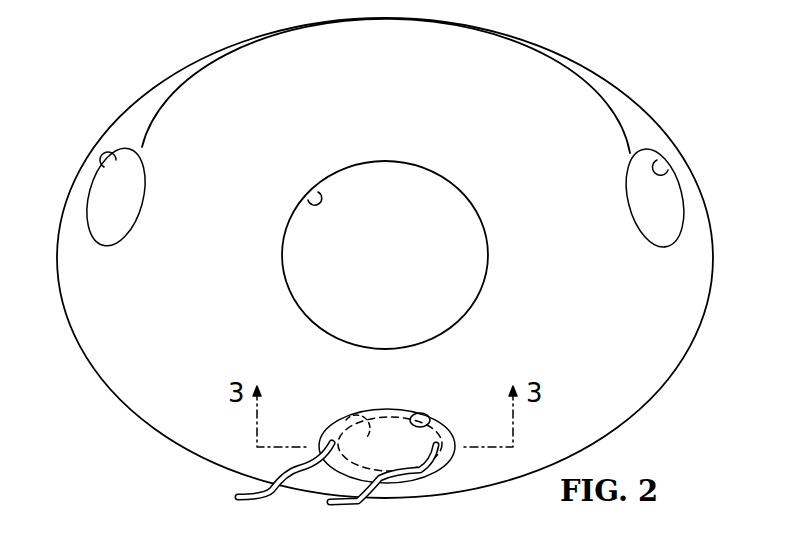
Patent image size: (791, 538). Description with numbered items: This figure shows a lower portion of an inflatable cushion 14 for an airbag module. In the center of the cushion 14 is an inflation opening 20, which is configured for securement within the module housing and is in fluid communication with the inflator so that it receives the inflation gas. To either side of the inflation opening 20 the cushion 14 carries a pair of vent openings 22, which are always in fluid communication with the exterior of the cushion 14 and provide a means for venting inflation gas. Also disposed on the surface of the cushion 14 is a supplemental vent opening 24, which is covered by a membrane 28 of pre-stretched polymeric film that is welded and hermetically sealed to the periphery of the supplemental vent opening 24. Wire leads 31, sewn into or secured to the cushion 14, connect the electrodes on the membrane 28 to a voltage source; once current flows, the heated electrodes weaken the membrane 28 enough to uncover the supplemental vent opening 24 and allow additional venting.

The cushion 14 is at (613, 87).
The inflation opening 20 is at (308, 200).
The vent openings 22 is at (104, 167).
The supplemental vent opening 24 is at (345, 438).
The membrane 28 is at (440, 428).
The wire leads 31 is at (255, 492).